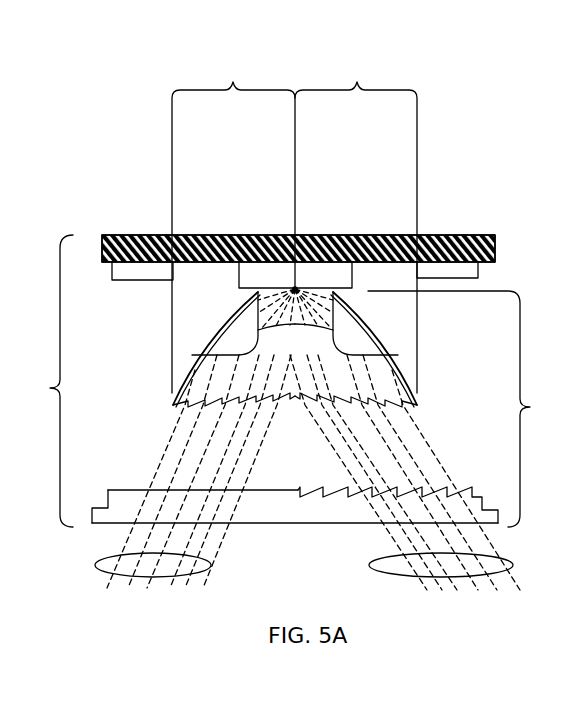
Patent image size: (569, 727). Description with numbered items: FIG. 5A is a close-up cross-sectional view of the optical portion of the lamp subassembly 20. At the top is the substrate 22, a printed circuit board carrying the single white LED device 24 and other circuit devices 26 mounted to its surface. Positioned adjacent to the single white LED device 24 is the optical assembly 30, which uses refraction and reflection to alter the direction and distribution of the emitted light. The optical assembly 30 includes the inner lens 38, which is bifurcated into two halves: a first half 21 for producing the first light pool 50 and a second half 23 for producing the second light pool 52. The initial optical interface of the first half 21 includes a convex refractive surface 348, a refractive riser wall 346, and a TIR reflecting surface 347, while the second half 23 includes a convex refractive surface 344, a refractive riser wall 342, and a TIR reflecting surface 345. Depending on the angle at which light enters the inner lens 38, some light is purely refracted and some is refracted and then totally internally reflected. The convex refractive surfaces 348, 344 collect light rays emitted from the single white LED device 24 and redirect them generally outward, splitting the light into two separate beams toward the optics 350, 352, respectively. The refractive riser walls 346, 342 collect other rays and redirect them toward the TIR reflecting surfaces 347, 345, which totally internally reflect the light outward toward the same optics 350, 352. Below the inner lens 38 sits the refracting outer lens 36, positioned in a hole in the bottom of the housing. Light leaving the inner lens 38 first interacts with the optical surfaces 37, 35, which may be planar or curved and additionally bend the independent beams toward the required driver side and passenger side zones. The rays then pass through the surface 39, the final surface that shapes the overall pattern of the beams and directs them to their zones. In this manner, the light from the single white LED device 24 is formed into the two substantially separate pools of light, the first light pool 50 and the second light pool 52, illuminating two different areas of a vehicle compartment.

The lamp subassembly 20 is at (50, 388).
The first half 21 is at (356, 222).
The substrate 22 is at (443, 235).
The second half 23 is at (233, 222).
The single white LED device 24 is at (247, 277).
The circuit devices 26 is at (160, 282).
The optical assembly 30 is at (530, 407).
The optical surface 35 is at (132, 488).
The refracting outer lens 36 is at (103, 513).
The optical surface 37 is at (455, 490).
The inner lens 38 is at (297, 429).
The surface 39 is at (292, 525).
The first light pool 50 is at (372, 567).
The second light pool 52 is at (212, 565).
The refractive riser wall 342 is at (263, 300).
The convex refractive surface 344 is at (192, 355).
The TIR reflecting surface 345 is at (216, 347).
The refractive riser wall 346 is at (328, 310).
The TIR reflecting surface 347 is at (370, 333).
The convex refractive surface 348 is at (398, 355).
The optics 350 is at (378, 408).
The optics 352 is at (213, 409).